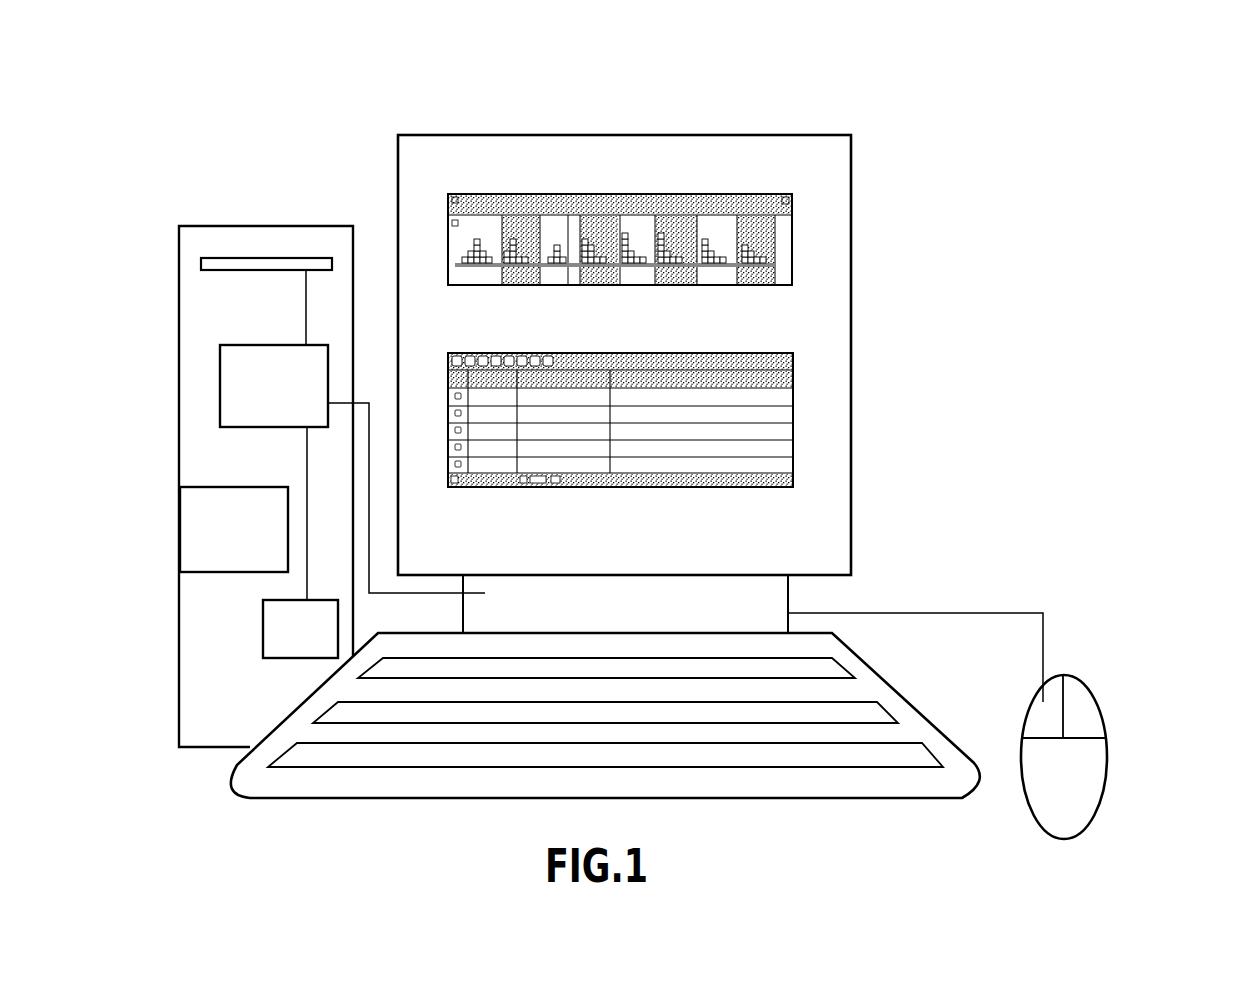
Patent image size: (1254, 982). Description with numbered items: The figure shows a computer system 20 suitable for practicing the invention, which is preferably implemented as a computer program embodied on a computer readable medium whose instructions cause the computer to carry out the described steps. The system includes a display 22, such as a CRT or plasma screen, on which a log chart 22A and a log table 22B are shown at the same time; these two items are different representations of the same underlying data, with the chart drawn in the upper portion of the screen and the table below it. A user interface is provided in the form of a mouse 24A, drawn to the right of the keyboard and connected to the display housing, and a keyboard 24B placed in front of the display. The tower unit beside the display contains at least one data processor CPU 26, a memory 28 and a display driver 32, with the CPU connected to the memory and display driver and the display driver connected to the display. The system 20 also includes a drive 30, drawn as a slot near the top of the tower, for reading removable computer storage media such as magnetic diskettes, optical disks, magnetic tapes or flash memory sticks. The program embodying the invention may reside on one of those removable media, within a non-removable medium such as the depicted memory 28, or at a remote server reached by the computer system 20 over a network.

The computer system 20 is at (846, 84).
The display 22 is at (851, 278).
The log chart 22A is at (780, 231).
The log table 22B is at (793, 359).
The mouse 24A is at (1083, 713).
The keyboard 24B is at (715, 785).
The CPU 26 is at (220, 385).
The memory 28 is at (197, 511).
The drive 30 is at (218, 271).
The display driver 32 is at (314, 641).